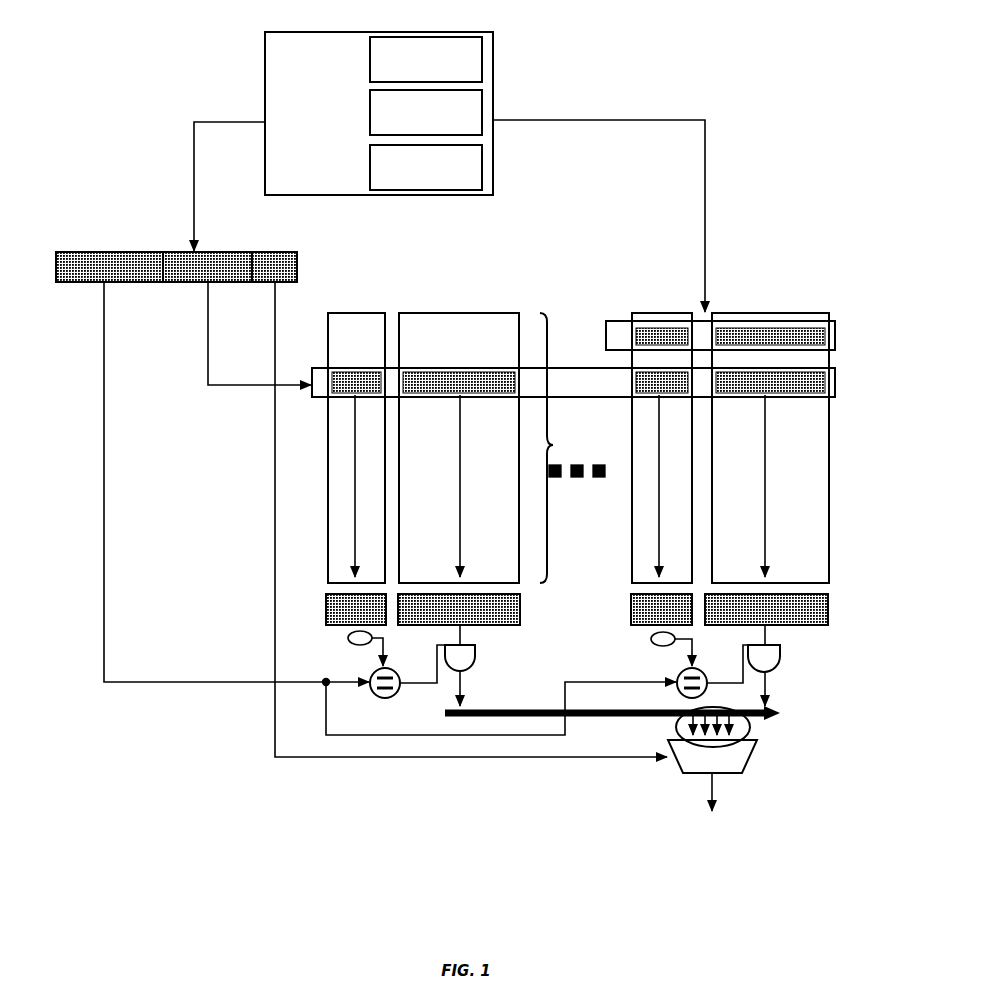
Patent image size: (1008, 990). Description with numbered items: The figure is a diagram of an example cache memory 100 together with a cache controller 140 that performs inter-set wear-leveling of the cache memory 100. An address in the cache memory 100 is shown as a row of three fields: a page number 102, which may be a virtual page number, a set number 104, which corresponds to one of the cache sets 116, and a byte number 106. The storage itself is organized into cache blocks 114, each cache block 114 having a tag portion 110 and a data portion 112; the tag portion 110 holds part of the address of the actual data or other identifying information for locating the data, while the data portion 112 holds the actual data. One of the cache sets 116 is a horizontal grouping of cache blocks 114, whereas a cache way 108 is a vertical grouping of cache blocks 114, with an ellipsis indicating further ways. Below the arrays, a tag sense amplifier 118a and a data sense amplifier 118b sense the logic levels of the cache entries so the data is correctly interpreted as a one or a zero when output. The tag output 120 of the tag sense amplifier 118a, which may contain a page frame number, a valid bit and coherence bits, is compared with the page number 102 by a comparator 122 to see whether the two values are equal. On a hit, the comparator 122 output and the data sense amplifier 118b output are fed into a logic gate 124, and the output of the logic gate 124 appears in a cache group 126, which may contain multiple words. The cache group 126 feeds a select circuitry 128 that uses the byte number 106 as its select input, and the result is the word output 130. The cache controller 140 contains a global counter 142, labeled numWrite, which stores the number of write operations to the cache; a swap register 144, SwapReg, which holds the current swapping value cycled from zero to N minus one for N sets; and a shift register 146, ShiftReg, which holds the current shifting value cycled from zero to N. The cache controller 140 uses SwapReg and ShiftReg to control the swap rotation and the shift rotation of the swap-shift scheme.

The cache memory 100 is at (466, 435).
The page number 102 is at (212, 467).
The set number 104 is at (207, 267).
The byte number 106 is at (459, 504).
The cache way 108 is at (578, 448).
The tag portion 110 is at (356, 448).
The data portion 112 is at (459, 448).
The cache block 114 is at (836, 336).
The cache sets 116 is at (836, 384).
The tag sense amplifier 118a is at (356, 609).
The data sense amplifier 118b is at (459, 609).
The tag output 120 is at (649, 647).
The comparator 122 is at (364, 706).
The logic gate 124 is at (477, 656).
The cache group 126 is at (756, 727).
The select circuitry 128 is at (712, 756).
The word output 130 is at (712, 806).
The cache controller 140 is at (449, 171).
The global counter 142 is at (484, 62).
The swap register 144 is at (484, 114).
The shift register 146 is at (484, 169).